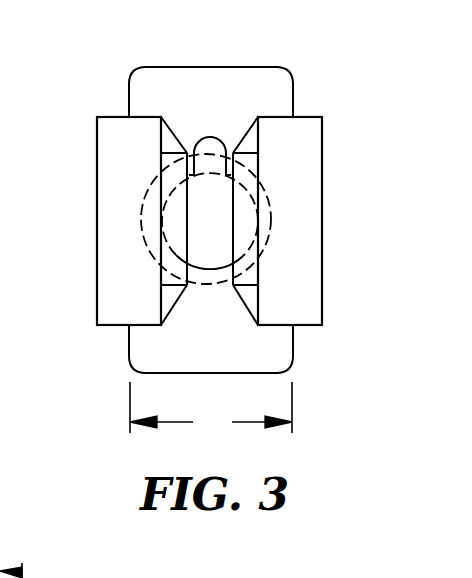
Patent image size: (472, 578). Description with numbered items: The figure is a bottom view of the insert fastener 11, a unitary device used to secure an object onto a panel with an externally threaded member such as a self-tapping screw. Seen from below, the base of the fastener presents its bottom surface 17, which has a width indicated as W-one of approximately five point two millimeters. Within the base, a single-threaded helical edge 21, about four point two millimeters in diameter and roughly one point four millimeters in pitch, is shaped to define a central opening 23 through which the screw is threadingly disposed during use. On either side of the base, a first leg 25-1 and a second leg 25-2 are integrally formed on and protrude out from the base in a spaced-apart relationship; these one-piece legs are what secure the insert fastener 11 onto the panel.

The insert fastener 11 is at (98, 352).
The bottom surface 17 is at (263, 85).
The helical edge 21 is at (208, 277).
The central opening 23 is at (209, 150).
The first leg 25-1 is at (89, 208).
The second leg 25-2 is at (328, 248).